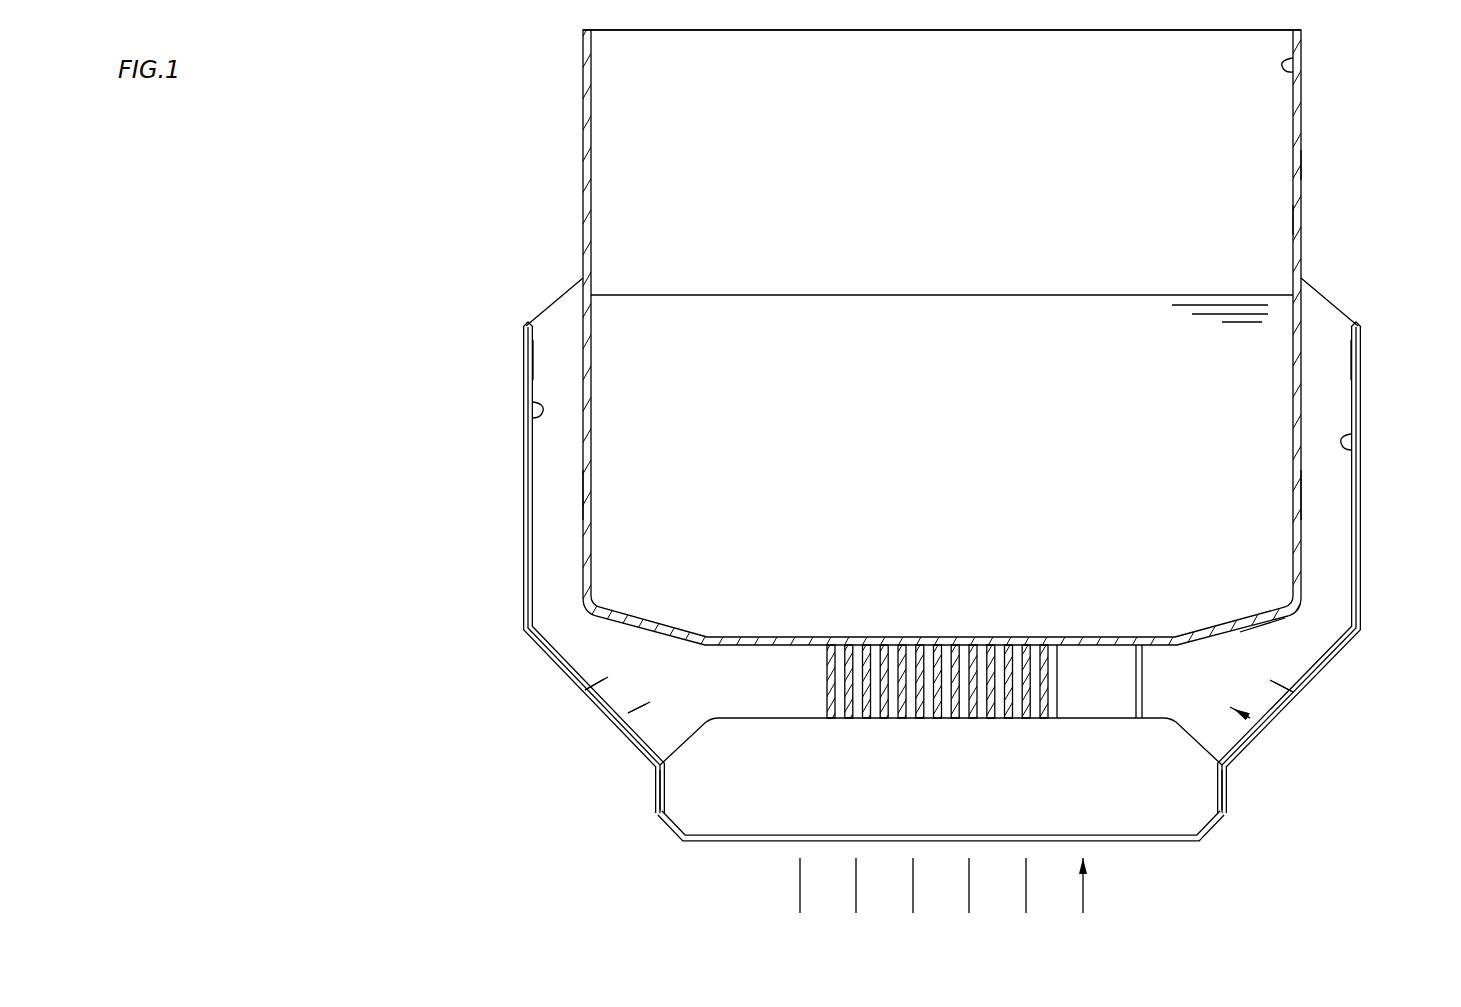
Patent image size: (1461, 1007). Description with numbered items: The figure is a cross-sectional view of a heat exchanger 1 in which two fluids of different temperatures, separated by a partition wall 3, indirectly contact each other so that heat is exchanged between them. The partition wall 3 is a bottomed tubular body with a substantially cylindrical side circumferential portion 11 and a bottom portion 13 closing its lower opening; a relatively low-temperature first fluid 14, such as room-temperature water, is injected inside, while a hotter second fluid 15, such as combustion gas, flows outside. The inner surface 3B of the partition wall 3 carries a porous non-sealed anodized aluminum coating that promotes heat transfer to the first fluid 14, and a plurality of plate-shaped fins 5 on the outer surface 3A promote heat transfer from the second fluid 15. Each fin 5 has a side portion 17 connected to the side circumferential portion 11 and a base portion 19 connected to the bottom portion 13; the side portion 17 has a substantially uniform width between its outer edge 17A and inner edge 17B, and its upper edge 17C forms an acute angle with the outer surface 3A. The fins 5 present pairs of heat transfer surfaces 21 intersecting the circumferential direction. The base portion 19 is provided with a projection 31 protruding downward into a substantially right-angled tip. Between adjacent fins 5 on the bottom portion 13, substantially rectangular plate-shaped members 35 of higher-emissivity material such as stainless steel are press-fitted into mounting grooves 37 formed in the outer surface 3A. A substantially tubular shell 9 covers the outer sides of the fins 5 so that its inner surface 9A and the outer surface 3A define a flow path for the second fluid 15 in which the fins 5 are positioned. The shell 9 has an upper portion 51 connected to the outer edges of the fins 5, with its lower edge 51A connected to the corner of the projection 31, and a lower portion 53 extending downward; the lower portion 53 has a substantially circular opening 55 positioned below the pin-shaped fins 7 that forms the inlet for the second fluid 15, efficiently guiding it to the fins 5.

The heat exchanger 1 is at (533, 88).
The partition wall 3 is at (1318, 118).
The outer surface 3A is at (1301, 165).
The inner surface 3B is at (1301, 72).
The side circumferential portion 11 is at (1312, 216).
The first fluid 14 is at (958, 465).
The inner edge 17B is at (597, 495).
The bottom portion 13 is at (1275, 634).
The plate-shaped fin 5 is at (939, 591).
The side portion 17 is at (939, 570).
The outer edge 17A is at (518, 465).
The upper edge 17C is at (556, 305).
The heat transfer surface 21 is at (548, 358).
The shell 9 is at (944, 413).
The inner surface 9A is at (533, 410).
The upper portion 51 is at (939, 567).
The lower edge 51A is at (655, 775).
The lower portion 53 is at (926, 859).
The opening 55 is at (706, 843).
The base portion 19 is at (625, 740).
The projection 31 is at (941, 751).
The plate-shaped member 35 is at (1097, 706).
The mounting groove 37 is at (1085, 650).
The pin-shaped fin 7 is at (926, 724).
The second fluid 15 is at (958, 947).